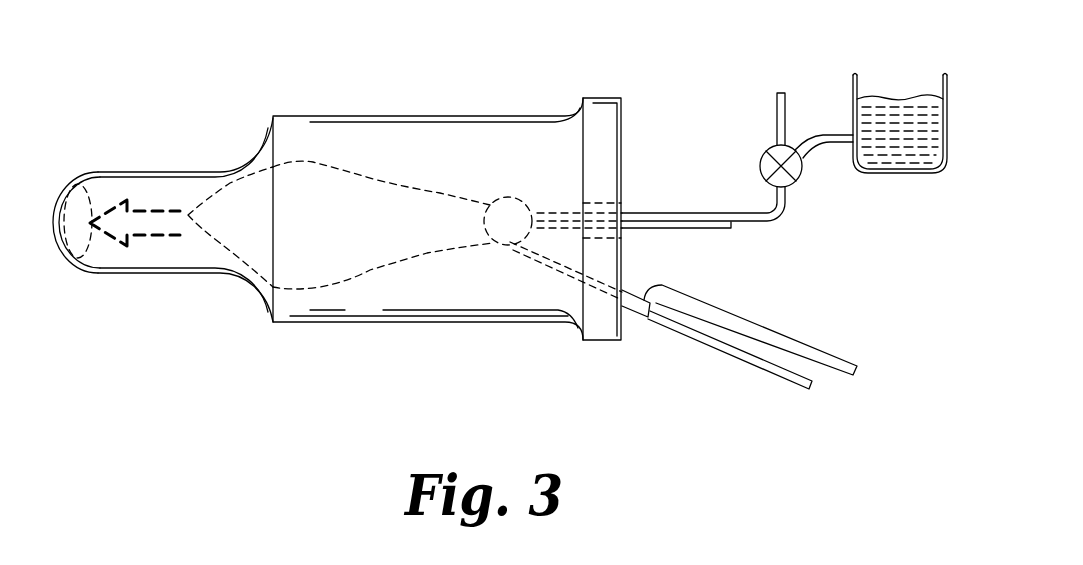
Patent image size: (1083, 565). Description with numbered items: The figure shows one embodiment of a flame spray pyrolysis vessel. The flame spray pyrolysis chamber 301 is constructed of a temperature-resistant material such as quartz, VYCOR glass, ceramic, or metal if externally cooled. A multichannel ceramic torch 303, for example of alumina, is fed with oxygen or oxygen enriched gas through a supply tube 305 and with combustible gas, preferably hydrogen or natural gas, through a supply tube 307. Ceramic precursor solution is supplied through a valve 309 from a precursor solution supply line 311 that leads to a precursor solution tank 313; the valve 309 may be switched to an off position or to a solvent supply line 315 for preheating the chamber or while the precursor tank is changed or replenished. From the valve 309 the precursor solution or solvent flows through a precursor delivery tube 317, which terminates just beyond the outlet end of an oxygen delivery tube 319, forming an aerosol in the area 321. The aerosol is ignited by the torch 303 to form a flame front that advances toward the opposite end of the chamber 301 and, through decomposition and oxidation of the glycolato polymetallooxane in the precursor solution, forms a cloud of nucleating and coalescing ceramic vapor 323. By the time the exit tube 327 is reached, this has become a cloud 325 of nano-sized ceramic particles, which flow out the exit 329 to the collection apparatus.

The flame spray pyrolysis chamber 301 is at (363, 324).
The multichannel ceramic torch 303 is at (538, 265).
The supply tube 305 is at (790, 333).
The supply tube 307 is at (688, 335).
The valve 309 is at (800, 179).
The precursor solution supply line 311 is at (830, 143).
The precursor solution tank 313 is at (852, 88).
The solvent supply line 315 is at (777, 104).
The precursor delivery tube 317 is at (640, 212).
The oxygen delivery tube 319 is at (712, 231).
The aerosol area 321 is at (511, 197).
The cloud of nucleating and coalescing ceramic vapor 323 is at (465, 217).
The cloud of nano-sized ceramic particles 325 is at (262, 247).
The exit tube 327 is at (167, 172).
The exit 329 is at (73, 187).